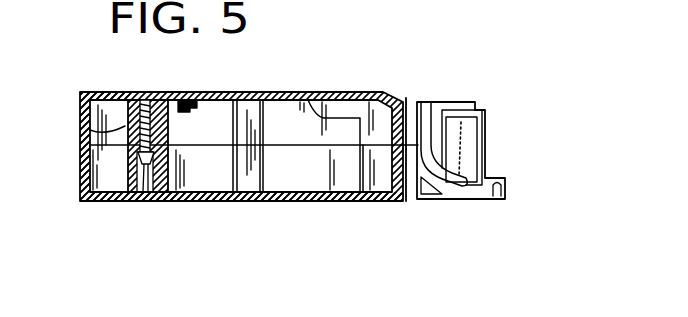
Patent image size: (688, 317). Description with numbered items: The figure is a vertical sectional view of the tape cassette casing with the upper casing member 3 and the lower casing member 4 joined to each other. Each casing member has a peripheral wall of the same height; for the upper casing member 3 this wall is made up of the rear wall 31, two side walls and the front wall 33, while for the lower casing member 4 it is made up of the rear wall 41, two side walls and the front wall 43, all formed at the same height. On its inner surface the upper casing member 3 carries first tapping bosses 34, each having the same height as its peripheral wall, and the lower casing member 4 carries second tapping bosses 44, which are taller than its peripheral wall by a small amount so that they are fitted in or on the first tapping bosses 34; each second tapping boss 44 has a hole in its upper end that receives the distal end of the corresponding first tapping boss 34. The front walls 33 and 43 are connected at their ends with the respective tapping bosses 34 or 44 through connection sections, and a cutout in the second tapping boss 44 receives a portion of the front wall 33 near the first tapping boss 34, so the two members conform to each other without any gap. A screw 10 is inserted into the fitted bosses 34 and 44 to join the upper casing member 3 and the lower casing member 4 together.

The upper casing member 3 is at (348, 92).
The lower casing member 4 is at (268, 203).
The screw 10 is at (147, 200).
The rear wall 31 is at (79, 102).
The front wall 33 is at (407, 104).
The first tapping boss 34 is at (80, 124).
The rear wall 41 is at (78, 175).
The front wall 43 is at (401, 178).
The second tapping boss 44 is at (129, 180).